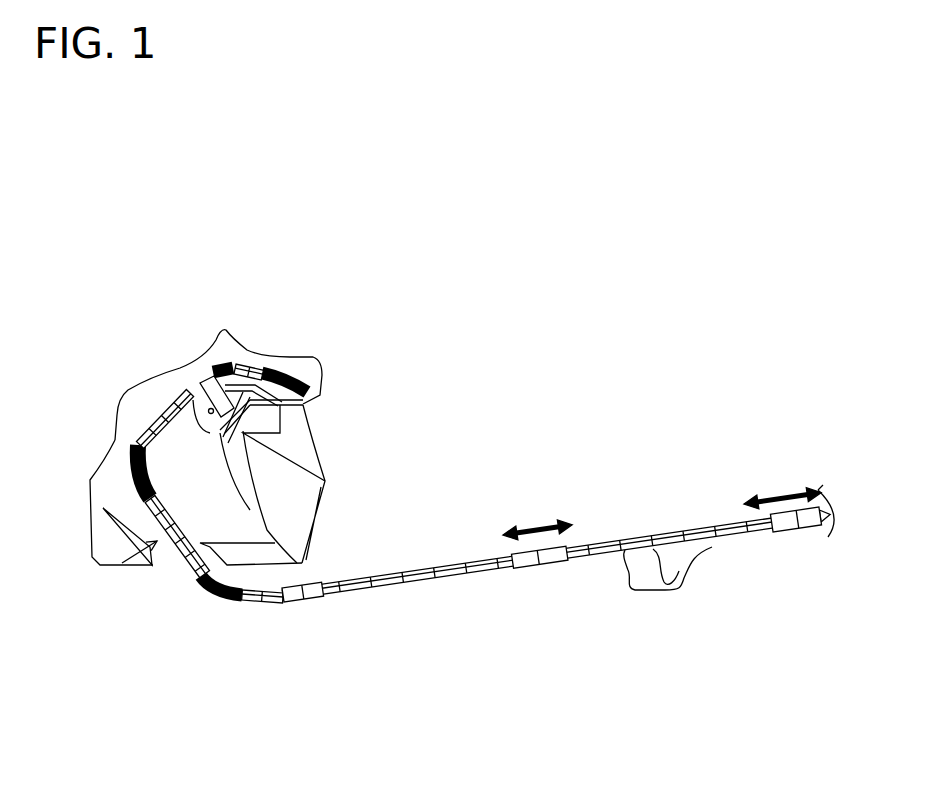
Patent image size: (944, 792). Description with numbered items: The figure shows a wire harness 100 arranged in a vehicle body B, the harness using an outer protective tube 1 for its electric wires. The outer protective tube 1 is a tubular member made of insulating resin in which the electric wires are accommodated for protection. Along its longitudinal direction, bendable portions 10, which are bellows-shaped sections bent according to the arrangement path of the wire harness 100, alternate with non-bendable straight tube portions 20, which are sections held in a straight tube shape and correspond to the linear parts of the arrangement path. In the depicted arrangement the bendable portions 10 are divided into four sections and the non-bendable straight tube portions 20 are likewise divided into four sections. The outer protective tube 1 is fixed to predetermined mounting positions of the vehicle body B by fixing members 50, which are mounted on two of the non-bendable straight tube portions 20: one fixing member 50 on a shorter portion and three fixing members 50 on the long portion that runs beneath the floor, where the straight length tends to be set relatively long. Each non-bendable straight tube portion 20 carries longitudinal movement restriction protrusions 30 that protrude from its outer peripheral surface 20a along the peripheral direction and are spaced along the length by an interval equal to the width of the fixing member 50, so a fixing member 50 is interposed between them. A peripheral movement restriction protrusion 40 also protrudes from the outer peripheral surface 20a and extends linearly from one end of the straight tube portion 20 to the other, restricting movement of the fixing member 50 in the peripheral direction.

The outer protective tube 1 is at (640, 482).
The bendable portion 10 is at (223, 366).
The non-bendable straight tube portion 20 is at (243, 366).
The outer peripheral surface 20a is at (433, 560).
The longitudinal movement restriction protrusion 30 is at (317, 584).
The peripheral movement restriction protrusion 40 is at (403, 587).
The fixing member 50 is at (192, 392).
The wire harness 100 is at (406, 548).
The vehicle body B is at (303, 503).